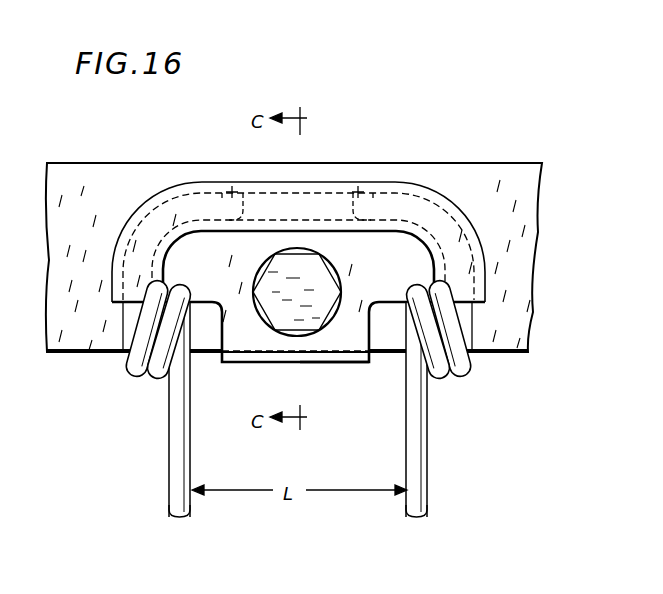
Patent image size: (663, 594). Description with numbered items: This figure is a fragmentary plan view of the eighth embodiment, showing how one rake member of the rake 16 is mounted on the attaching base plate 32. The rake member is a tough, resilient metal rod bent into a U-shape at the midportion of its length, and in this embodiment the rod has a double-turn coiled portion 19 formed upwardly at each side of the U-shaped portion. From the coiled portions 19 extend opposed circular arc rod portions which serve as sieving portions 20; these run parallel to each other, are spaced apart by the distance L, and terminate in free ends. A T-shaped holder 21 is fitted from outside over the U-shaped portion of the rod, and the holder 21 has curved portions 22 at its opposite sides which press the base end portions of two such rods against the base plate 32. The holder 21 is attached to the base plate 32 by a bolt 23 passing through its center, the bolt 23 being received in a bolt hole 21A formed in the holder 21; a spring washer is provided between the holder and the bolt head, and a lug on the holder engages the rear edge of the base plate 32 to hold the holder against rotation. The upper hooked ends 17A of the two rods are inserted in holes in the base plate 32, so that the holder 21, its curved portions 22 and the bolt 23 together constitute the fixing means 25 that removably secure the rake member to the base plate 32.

The rake 16 is at (163, 510).
The hooked end 17A is at (231, 188).
The coiled portion 19 is at (128, 382).
The sieving portion 20 is at (169, 482).
The T-shaped holder 21 is at (243, 330).
The bolt hole 21A is at (338, 364).
The curved portion 22 is at (128, 212).
The bolt 23 is at (318, 278).
The fixing means 25 is at (184, 159).
The attaching base plate 32 is at (484, 172).